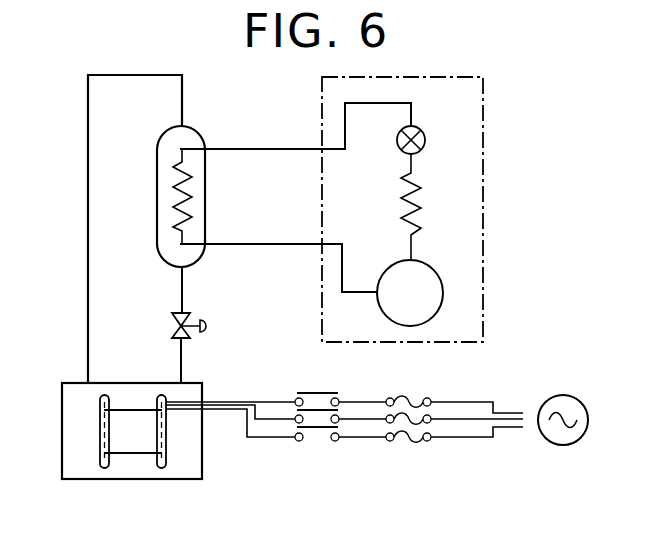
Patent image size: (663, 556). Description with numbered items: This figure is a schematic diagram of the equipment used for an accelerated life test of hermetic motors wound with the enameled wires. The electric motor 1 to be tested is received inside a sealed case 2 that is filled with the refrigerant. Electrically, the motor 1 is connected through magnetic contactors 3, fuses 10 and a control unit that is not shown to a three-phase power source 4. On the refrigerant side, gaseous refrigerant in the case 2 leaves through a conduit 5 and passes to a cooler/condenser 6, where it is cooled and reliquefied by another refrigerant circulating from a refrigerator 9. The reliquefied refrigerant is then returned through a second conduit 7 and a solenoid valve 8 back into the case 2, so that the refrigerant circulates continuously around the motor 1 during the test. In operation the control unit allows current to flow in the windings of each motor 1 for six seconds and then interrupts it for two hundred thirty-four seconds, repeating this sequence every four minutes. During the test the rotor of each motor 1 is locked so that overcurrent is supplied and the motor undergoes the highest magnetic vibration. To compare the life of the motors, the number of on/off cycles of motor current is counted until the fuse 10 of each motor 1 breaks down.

The electric motor 1 is at (128, 445).
The sealed case 2 is at (62, 408).
The magnetic contactors 3 is at (318, 432).
The three-phase power source 4 is at (552, 446).
The conduit 5 is at (88, 181).
The cooler/condenser 6 is at (197, 129).
The conduit 7 is at (183, 290).
The solenoid valve 8 is at (208, 326).
The refrigerator 9 is at (483, 156).
The fuses 10 is at (410, 441).